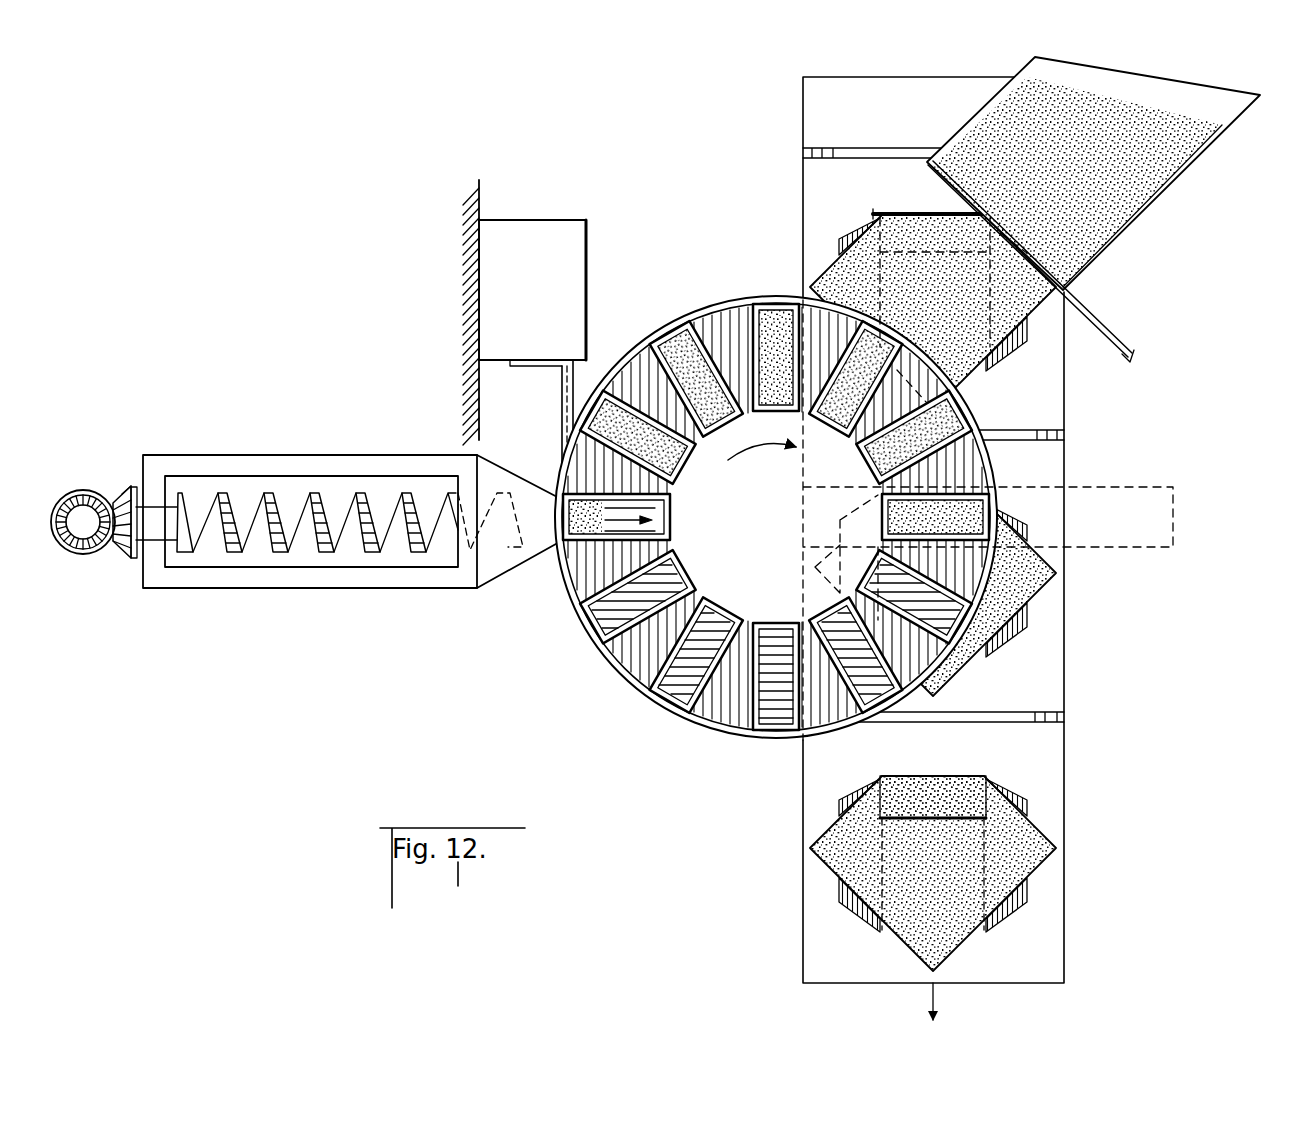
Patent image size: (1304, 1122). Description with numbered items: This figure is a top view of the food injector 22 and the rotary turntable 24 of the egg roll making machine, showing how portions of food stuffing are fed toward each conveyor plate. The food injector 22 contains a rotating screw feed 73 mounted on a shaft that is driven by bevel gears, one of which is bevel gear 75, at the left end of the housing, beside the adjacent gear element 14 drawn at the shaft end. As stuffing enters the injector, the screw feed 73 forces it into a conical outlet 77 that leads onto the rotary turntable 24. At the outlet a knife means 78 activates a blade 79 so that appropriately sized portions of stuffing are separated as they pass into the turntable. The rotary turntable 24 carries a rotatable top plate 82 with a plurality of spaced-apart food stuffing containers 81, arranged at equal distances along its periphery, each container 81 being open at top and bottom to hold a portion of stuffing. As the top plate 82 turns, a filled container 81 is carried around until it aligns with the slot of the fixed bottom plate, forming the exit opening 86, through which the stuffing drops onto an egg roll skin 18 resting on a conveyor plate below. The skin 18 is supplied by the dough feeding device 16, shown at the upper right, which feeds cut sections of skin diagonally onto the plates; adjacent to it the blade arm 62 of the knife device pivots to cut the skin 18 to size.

The drive gear 14 is at (124, 558).
The dough feeding device 16 is at (712, 346).
The egg roll skin 18 is at (950, 945).
The food injector 22 is at (279, 456).
The rotary turntable 24 is at (799, 503).
The blade arm 62 is at (1092, 324).
The screw feed 73 is at (279, 553).
The bevel gear 75 is at (84, 558).
The conical outlet 77 is at (500, 574).
The knife means 78 is at (573, 228).
The blade 79 is at (561, 400).
The food stuffing container 81 is at (702, 330).
The top plate 82 is at (784, 584).
The exit opening 86 is at (978, 503).